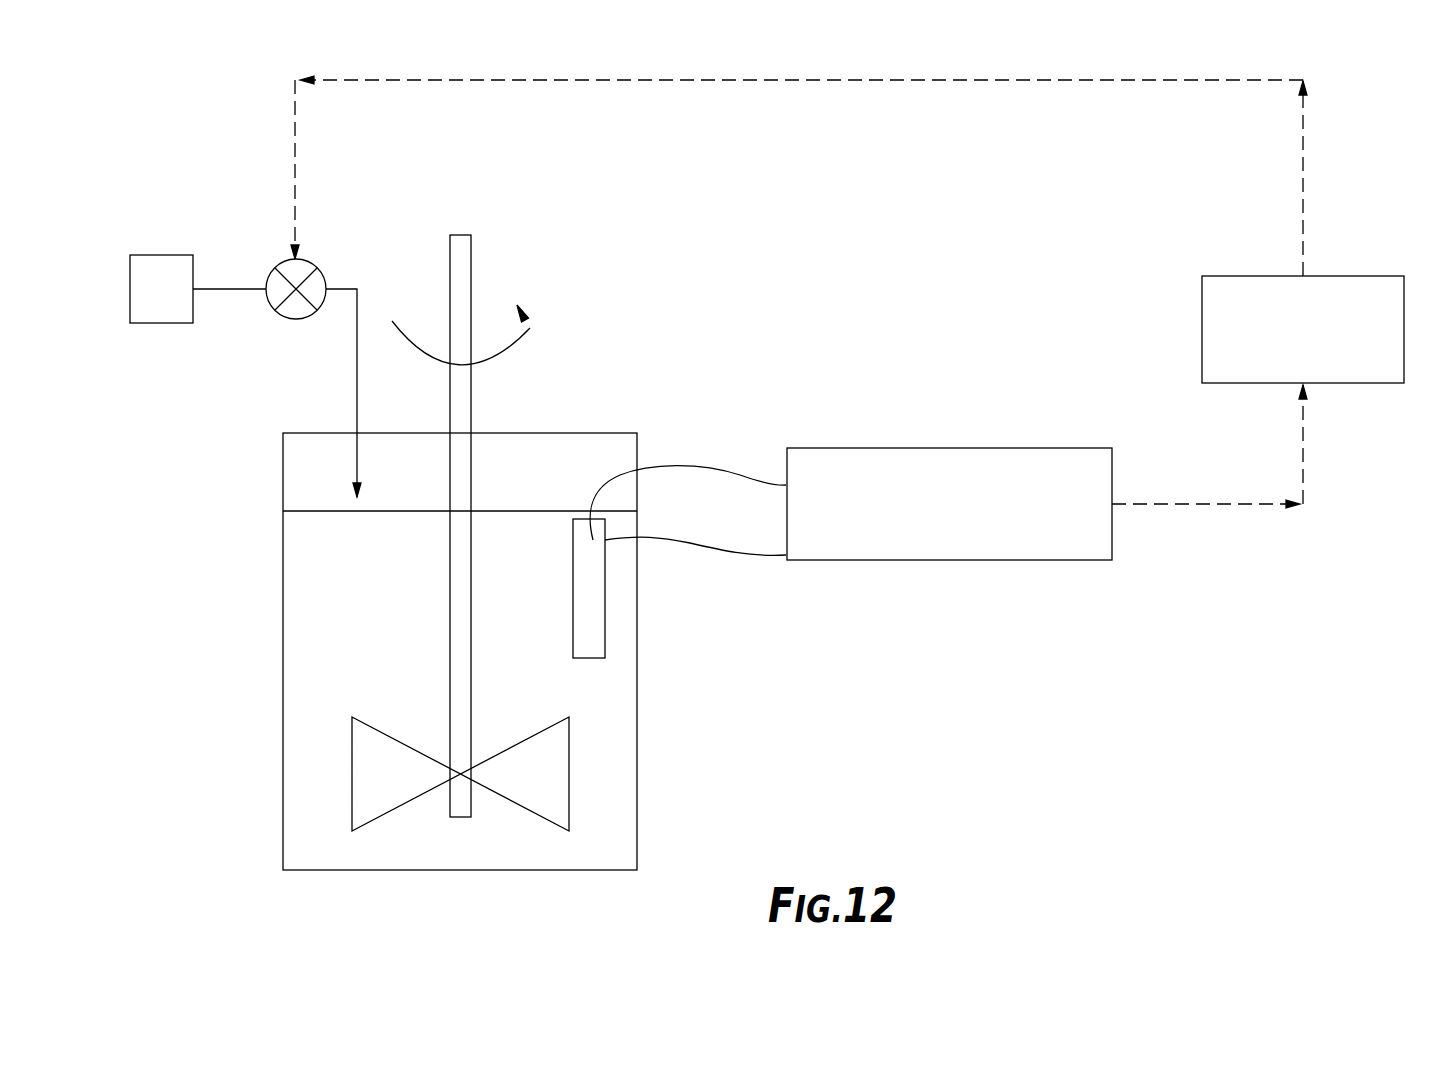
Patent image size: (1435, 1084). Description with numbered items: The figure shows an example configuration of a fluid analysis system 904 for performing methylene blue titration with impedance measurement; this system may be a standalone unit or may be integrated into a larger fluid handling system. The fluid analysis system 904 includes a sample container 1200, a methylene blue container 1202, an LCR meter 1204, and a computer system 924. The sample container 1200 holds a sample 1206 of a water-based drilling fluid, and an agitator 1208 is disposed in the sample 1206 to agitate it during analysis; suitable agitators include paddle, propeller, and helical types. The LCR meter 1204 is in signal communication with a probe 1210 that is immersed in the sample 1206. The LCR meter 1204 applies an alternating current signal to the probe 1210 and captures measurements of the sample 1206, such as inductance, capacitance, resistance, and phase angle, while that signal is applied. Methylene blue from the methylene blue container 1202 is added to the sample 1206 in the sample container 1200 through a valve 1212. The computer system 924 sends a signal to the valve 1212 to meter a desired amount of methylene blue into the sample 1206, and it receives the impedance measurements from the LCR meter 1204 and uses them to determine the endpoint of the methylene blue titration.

The fluid analysis system 904 is at (1199, 575).
The computer system 924 is at (1202, 308).
The sample container 1200 is at (637, 666).
The methylene blue container 1202 is at (177, 323).
The LCR meter 1204 is at (907, 448).
The sample 1206 is at (318, 635).
The agitator 1208 is at (472, 410).
The probe 1210 is at (605, 608).
The valve 1212 is at (312, 260).